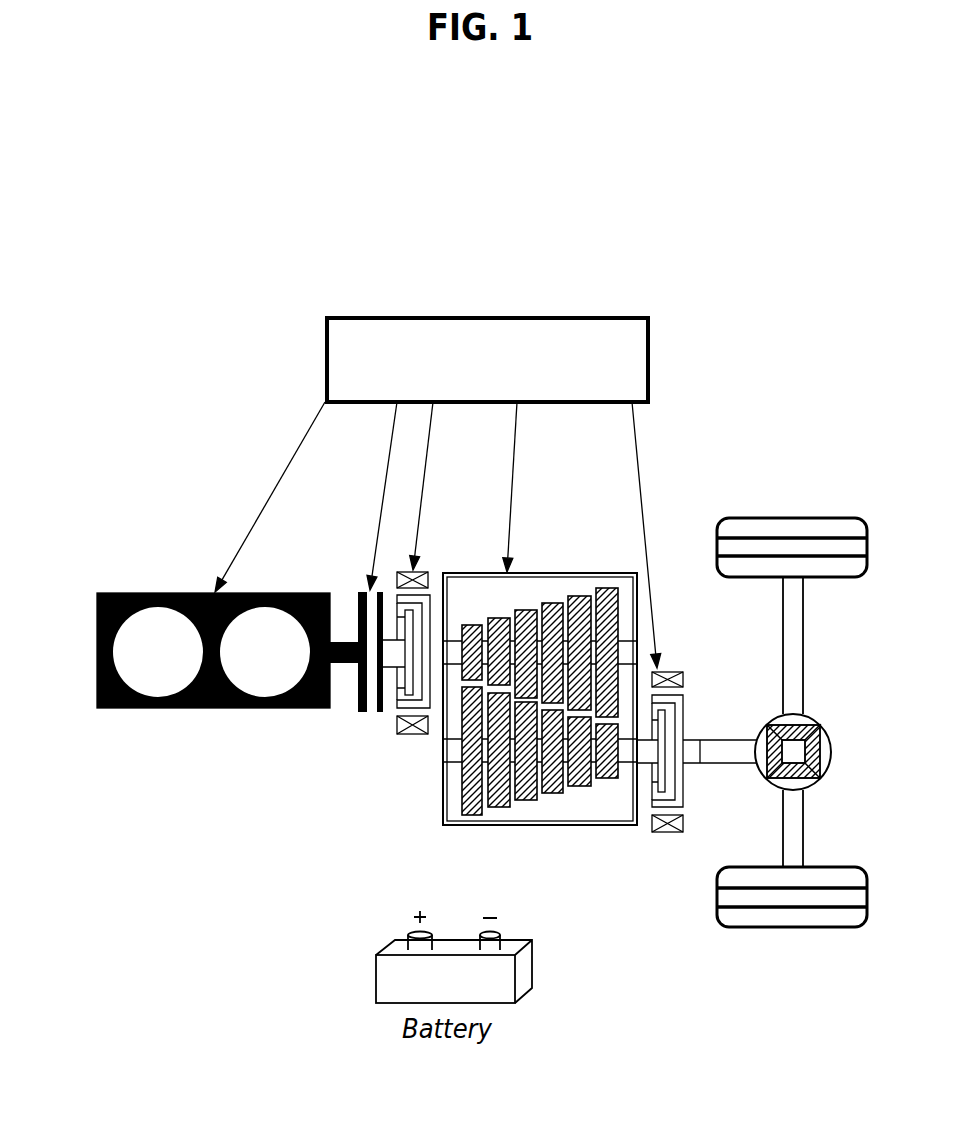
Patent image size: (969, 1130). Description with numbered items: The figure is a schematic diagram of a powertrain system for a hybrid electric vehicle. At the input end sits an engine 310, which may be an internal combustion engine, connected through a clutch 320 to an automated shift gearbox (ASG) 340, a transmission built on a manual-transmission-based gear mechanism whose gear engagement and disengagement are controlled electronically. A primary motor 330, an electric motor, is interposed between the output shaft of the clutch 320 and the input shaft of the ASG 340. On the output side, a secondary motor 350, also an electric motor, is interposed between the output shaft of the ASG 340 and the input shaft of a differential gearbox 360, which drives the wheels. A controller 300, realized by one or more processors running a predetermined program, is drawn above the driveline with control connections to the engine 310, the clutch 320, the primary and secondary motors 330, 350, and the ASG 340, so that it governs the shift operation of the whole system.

The controller 300 is at (650, 358).
The engine 310 is at (97, 630).
The clutch 320 is at (358, 728).
The primary motor 330 is at (422, 573).
The automated shift gearbox (ASG) 340 is at (553, 573).
The secondary motor 350 is at (665, 670).
The differential gearbox 360 is at (850, 715).